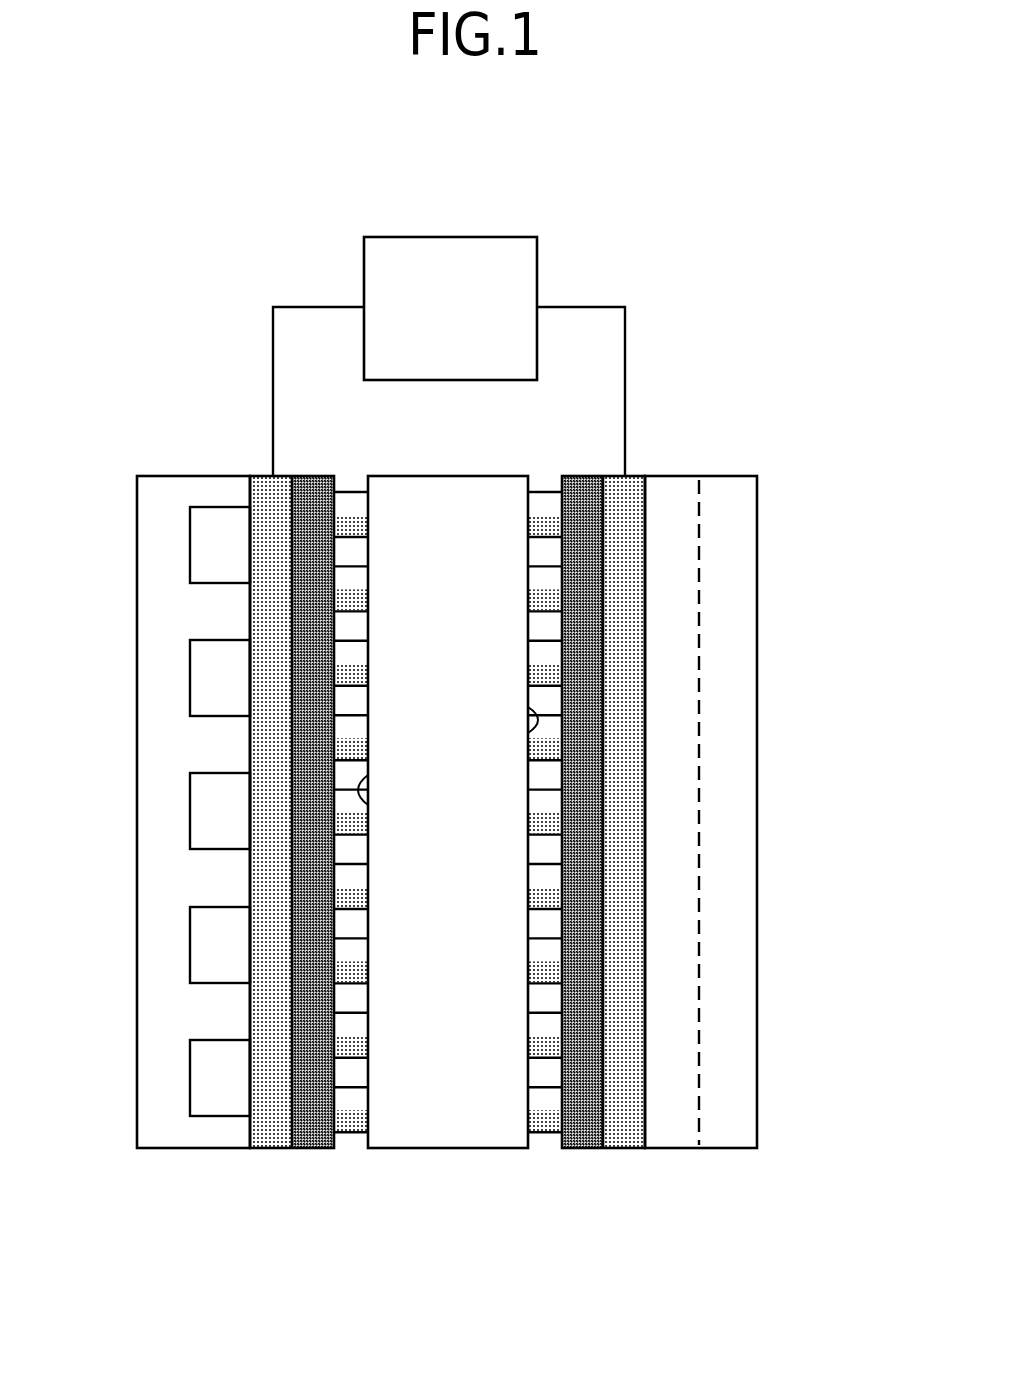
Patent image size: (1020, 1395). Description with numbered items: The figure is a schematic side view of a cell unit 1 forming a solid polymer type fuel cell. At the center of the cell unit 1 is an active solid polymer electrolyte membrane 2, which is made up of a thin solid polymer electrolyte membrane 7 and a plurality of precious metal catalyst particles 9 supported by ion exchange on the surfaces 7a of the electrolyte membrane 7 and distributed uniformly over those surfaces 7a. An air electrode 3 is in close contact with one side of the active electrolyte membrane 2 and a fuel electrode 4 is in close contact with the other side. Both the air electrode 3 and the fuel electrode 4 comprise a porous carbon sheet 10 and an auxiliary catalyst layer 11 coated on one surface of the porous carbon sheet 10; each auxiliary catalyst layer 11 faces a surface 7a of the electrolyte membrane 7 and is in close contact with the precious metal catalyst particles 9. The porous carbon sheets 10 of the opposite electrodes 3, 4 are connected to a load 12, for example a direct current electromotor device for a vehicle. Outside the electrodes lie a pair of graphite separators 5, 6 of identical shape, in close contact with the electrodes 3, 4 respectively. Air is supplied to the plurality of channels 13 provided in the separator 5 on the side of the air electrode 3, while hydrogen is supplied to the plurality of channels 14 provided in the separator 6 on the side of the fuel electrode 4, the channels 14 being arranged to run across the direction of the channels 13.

The cell unit 1 is at (692, 460).
The active solid polymer electrolyte membrane 2 is at (448, 880).
The air electrode 3 is at (313, 1225).
The fuel electrode 4 is at (705, 1225).
The separator 5 is at (160, 788).
The separator 6 is at (727, 806).
The solid polymer electrolyte membrane 7 is at (447, 1140).
The surface of the electrolyte membrane 7a is at (540, 722).
The precious metal catalyst particle 9 is at (540, 578).
The porous carbon sheet 10 is at (265, 1143).
The auxiliary catalyst layer 11 is at (312, 1149).
The load 12 is at (448, 245).
The channel 13 is at (206, 540).
The channel 14 is at (672, 603).